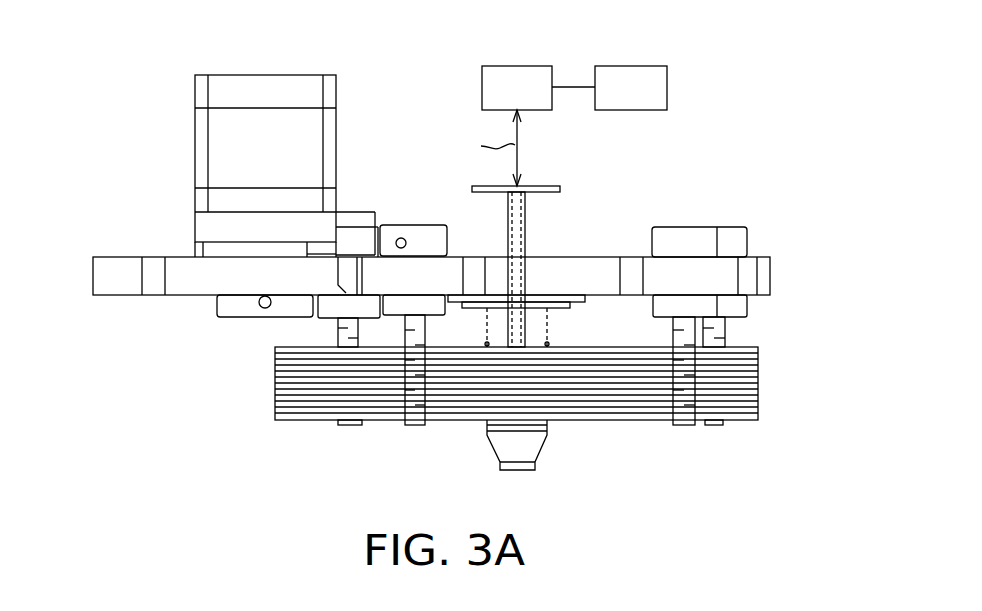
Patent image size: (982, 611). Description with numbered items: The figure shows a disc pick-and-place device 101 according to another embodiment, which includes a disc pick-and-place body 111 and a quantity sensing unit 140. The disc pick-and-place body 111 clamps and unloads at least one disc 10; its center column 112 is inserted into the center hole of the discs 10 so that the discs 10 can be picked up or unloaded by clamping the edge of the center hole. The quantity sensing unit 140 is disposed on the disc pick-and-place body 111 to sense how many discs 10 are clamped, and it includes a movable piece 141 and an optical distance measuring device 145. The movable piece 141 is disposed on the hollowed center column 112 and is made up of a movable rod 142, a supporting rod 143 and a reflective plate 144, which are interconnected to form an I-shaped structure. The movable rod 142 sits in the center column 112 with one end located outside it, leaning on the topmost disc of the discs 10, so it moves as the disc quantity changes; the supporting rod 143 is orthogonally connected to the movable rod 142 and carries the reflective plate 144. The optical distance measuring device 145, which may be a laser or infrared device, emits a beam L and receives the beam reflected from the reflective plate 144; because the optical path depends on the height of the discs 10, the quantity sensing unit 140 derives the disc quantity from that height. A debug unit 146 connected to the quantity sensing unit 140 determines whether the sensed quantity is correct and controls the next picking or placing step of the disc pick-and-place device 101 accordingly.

The disc pick-and-place device 101 is at (90, 53).
The quantity sensing unit 140 is at (455, 73).
The optical distance measuring device 145 is at (498, 100).
The debug unit 146 is at (612, 100).
The movable piece 141 is at (738, 113).
The reflective plate 144 is at (547, 186).
The supporting rod 143 is at (527, 223).
The movable rod 142 is at (546, 305).
The disc pick-and-place body 111 is at (767, 242).
The disc 10 is at (760, 347).
The center column 112 is at (540, 448).